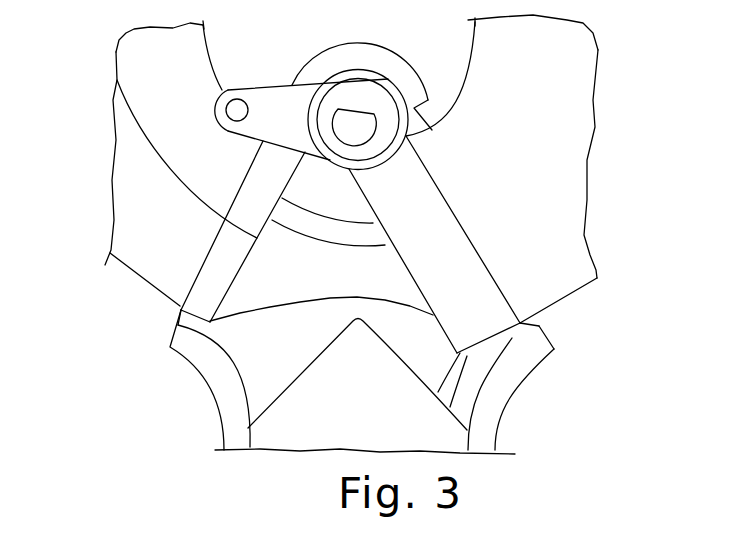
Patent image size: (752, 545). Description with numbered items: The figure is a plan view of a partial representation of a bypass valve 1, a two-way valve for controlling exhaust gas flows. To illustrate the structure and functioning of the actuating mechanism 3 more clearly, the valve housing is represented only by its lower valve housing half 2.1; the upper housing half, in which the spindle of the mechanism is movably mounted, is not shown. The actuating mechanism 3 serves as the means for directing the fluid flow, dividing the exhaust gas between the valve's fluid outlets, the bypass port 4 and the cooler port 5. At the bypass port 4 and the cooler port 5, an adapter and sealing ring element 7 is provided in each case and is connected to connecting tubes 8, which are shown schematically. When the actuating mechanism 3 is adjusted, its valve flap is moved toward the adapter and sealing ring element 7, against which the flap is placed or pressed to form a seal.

The bypass valve 1 is at (97, 107).
The lower valve housing half 2.1 is at (503, 387).
The actuating mechanism 3 is at (373, 102).
The bypass port 4 is at (182, 320).
The cooler port 5 is at (539, 326).
The adapter and sealing ring element 7 is at (197, 290).
The connecting tubes 8 is at (125, 185).